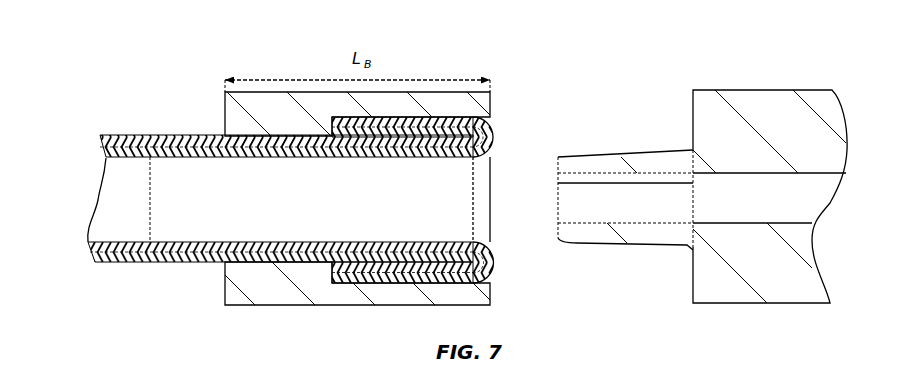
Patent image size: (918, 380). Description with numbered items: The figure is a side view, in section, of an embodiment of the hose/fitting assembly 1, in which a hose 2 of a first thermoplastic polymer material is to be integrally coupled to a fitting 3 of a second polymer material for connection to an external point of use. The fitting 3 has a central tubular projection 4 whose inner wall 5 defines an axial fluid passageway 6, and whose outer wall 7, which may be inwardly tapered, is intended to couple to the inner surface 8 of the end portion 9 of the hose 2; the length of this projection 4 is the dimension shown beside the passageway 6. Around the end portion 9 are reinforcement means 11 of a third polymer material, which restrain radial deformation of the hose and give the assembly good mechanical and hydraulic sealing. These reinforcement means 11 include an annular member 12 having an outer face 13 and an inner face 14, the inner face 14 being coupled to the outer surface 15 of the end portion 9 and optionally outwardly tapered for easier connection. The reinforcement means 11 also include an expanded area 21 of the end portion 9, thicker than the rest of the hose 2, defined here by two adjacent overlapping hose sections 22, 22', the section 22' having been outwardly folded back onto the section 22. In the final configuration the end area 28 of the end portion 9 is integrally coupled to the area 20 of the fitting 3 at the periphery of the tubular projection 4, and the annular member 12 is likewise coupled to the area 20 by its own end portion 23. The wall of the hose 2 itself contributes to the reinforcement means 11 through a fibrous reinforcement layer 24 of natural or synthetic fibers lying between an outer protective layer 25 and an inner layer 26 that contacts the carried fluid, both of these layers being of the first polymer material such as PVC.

The hose/fitting assembly 1 is at (102, 75).
The hose 2 is at (160, 128).
The fitting 3 is at (797, 73).
The central tubular projection 4 is at (567, 168).
The inner wall 5 is at (578, 178).
The axial fluid passageway 6 is at (705, 214).
The outer wall 7 is at (645, 156).
The inner surface 8 is at (390, 157).
The end portion 9 is at (304, 229).
The reinforcement means 11 is at (497, 274).
The annular member 12 is at (240, 117).
The outer face 13 is at (300, 92).
The inner face 14 is at (272, 158).
The outer surface 15 is at (268, 136).
The area of the fitting 20 is at (689, 118).
The expanded area 21 is at (503, 112).
The hose section 22 is at (402, 92).
The hose section 22' is at (402, 220).
The end portion of the annular member 23 is at (493, 101).
The fibrous reinforcement layer 24 is at (167, 256).
The outer protective layer 25 is at (115, 262).
The inner layer 26 is at (213, 256).
The end area 28 is at (496, 135).